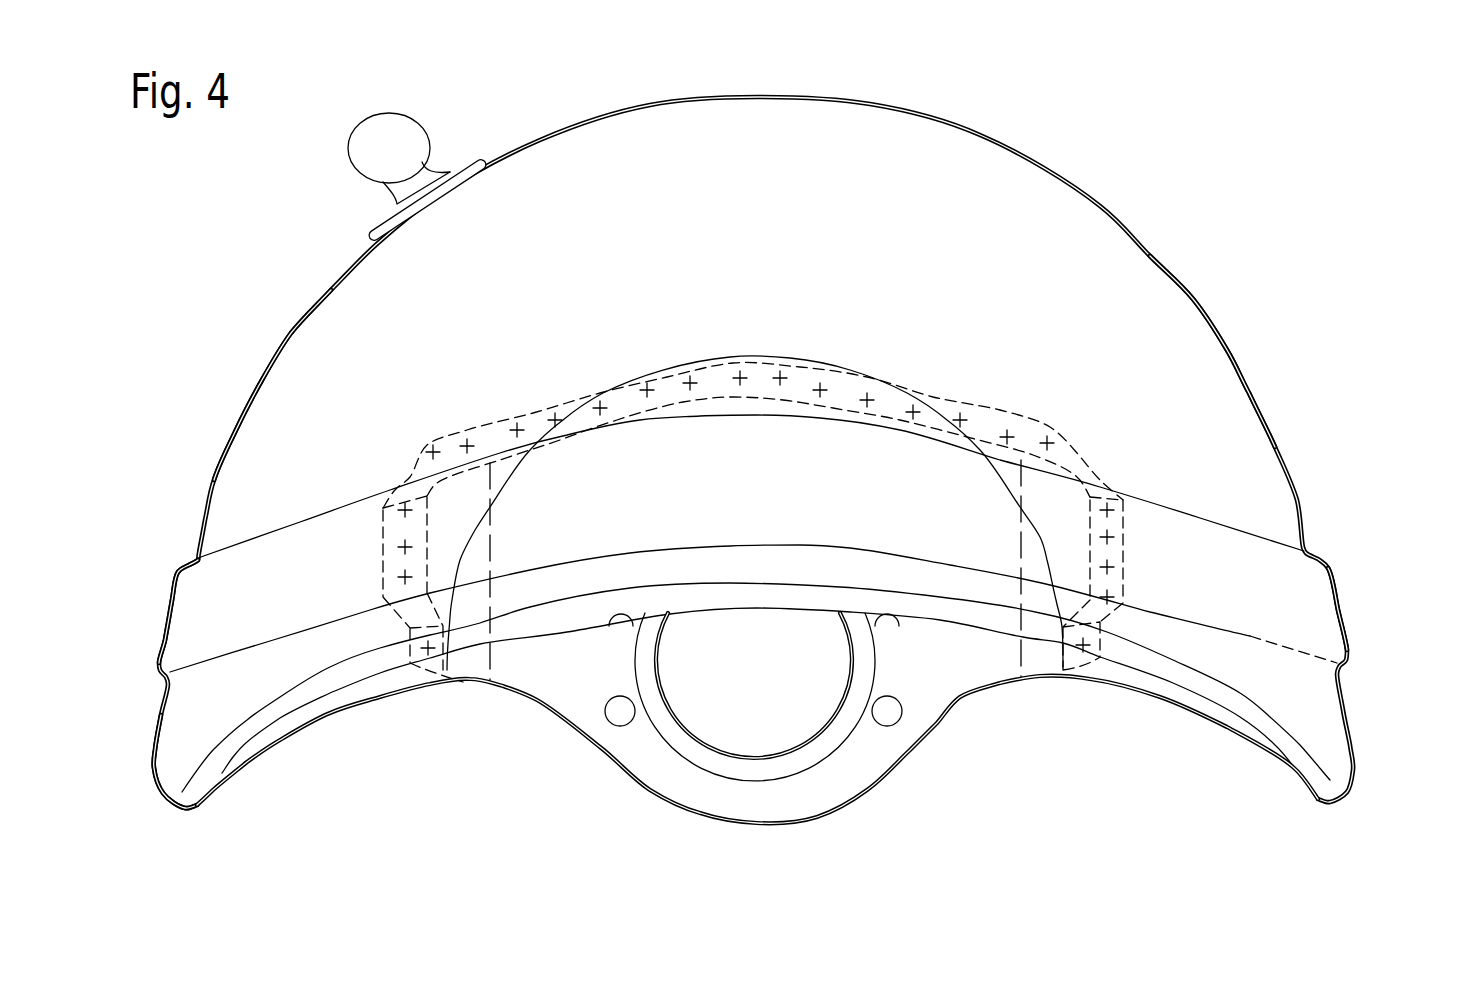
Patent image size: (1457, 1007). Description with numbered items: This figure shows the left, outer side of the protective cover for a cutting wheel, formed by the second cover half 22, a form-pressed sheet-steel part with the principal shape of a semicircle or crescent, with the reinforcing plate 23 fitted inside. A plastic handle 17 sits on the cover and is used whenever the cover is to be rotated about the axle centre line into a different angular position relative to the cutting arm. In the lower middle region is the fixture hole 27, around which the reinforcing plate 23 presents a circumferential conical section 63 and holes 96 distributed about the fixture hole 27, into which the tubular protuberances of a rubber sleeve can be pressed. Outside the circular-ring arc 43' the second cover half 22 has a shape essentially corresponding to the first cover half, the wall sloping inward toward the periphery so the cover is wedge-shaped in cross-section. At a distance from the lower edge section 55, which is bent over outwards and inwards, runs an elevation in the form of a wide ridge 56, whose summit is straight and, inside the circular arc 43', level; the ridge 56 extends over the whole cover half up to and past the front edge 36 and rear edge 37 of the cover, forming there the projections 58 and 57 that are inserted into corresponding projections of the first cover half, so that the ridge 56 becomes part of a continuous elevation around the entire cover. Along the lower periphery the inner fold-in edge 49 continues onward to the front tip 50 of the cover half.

The handle 17 is at (413, 128).
The second cover half 22 is at (985, 178).
The reinforcing plate 23 is at (563, 675).
The fixture hole 27 is at (801, 657).
The front edge 36 is at (236, 428).
The rear edge 37 is at (1227, 350).
The circular-ring arc 43' is at (753, 495).
The inner fold-in edge 49 is at (392, 703).
The front tip 50 is at (170, 808).
The lower edge section 55 is at (1190, 673).
The wide ridge 56 is at (834, 500).
The projection 57 is at (1343, 617).
The projection 58 is at (160, 632).
The conical section 63 is at (660, 718).
The holes 96 is at (620, 712).